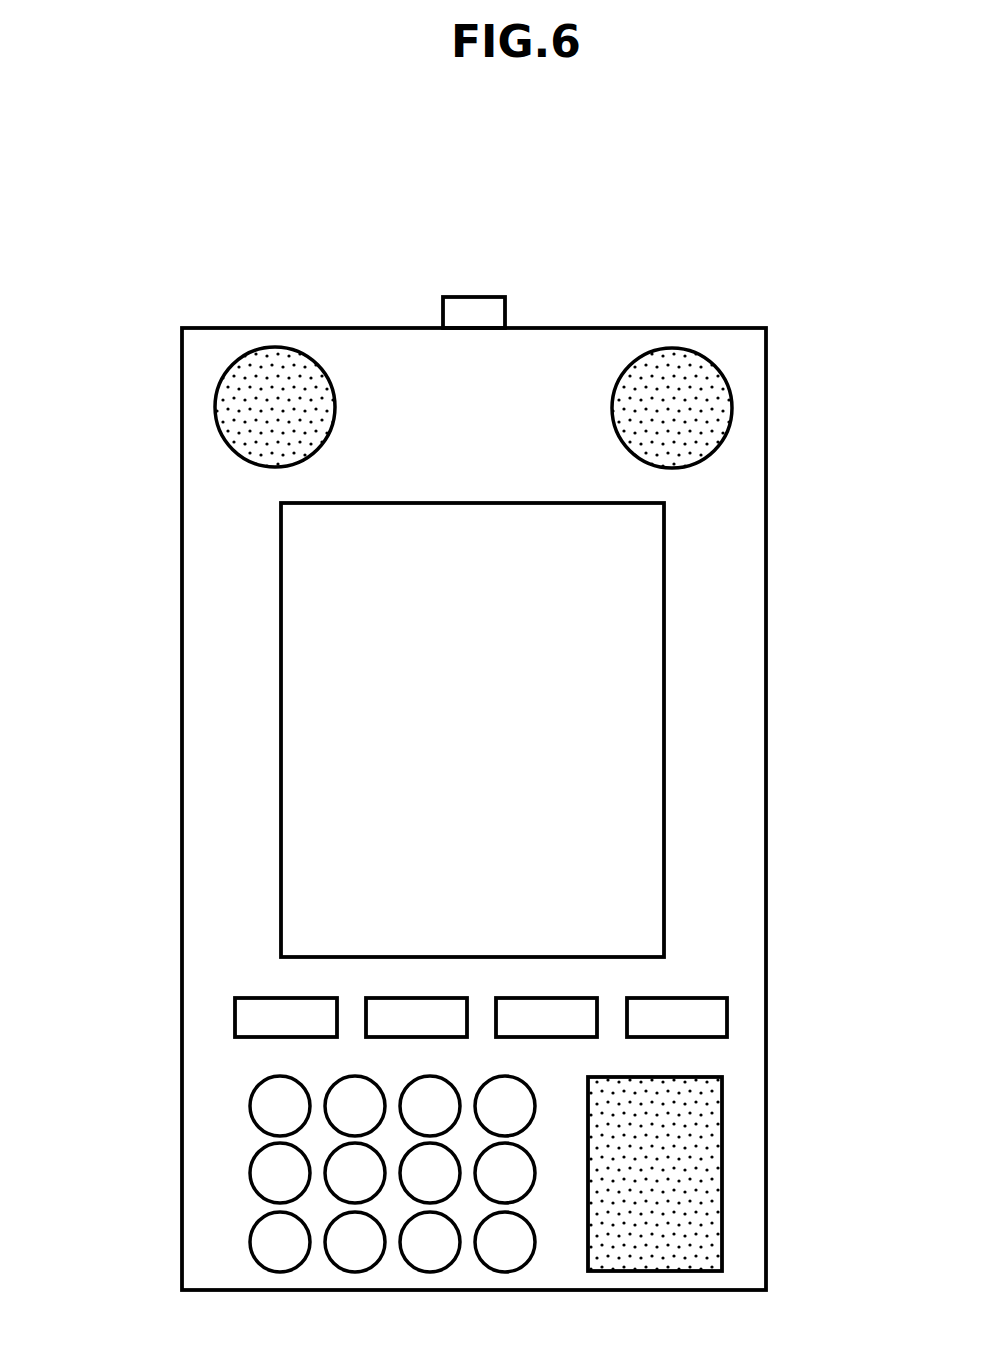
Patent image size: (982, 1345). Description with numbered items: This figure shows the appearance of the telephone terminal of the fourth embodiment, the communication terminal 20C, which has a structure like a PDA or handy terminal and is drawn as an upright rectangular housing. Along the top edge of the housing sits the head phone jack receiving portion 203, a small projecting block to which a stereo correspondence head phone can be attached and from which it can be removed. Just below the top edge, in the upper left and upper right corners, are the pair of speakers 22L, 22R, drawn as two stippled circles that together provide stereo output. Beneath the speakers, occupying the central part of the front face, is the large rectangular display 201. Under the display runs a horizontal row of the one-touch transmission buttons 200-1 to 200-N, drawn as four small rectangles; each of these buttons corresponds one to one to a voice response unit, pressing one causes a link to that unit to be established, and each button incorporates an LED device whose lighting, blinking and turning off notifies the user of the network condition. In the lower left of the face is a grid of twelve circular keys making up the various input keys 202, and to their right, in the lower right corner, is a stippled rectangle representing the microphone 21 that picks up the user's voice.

The communication terminal 20C is at (768, 548).
The head phone jack receiving portion 203 is at (478, 297).
The speaker 22L is at (275, 347).
The speaker 22R is at (672, 348).
The display 201 is at (664, 684).
The one-touch transmission button 200-1 is at (235, 1019).
The one-touch transmission button 200-N is at (727, 1020).
The input keys 202 is at (216, 1211).
The microphone 21 is at (722, 1148).